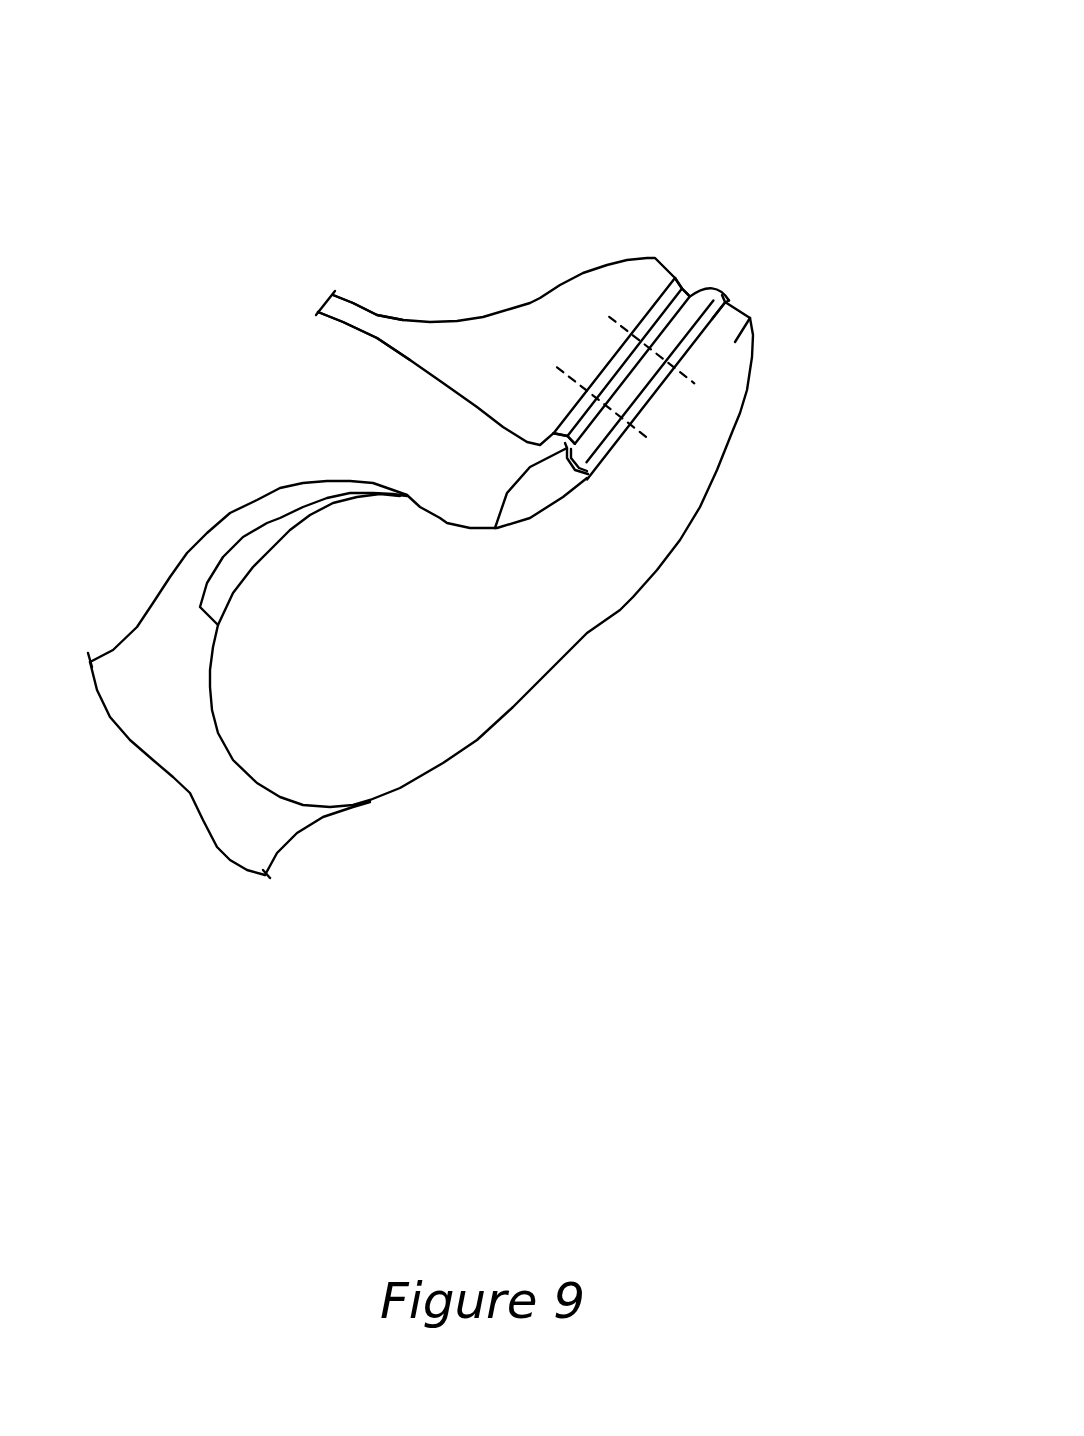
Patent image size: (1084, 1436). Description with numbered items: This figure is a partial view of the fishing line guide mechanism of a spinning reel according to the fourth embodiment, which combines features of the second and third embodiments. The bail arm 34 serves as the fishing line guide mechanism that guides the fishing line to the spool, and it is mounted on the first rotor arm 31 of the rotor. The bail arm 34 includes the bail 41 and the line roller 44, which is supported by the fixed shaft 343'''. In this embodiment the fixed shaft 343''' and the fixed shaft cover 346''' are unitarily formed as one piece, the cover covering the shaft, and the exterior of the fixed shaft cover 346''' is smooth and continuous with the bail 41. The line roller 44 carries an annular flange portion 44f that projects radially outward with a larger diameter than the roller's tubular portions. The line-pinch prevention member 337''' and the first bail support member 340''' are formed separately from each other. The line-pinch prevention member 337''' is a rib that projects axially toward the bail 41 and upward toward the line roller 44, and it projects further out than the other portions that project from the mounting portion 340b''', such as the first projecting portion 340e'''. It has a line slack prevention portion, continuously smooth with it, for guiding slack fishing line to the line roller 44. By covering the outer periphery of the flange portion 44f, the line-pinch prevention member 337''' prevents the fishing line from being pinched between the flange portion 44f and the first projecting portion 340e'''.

The first rotor arm 31 is at (255, 701).
The bail arm 34 is at (768, 133).
The bail 41 is at (363, 260).
The line roller 44 is at (688, 290).
The flange portion 44f is at (733, 248).
The line-pinch prevention member 337''' is at (435, 461).
The first bail support member 340''' is at (561, 559).
The mounting portion 340b''' is at (836, 293).
The first projecting portion 340e''' is at (827, 268).
The fixed shaft 343''' is at (750, 390).
The fixed shaft cover 346''' is at (503, 301).